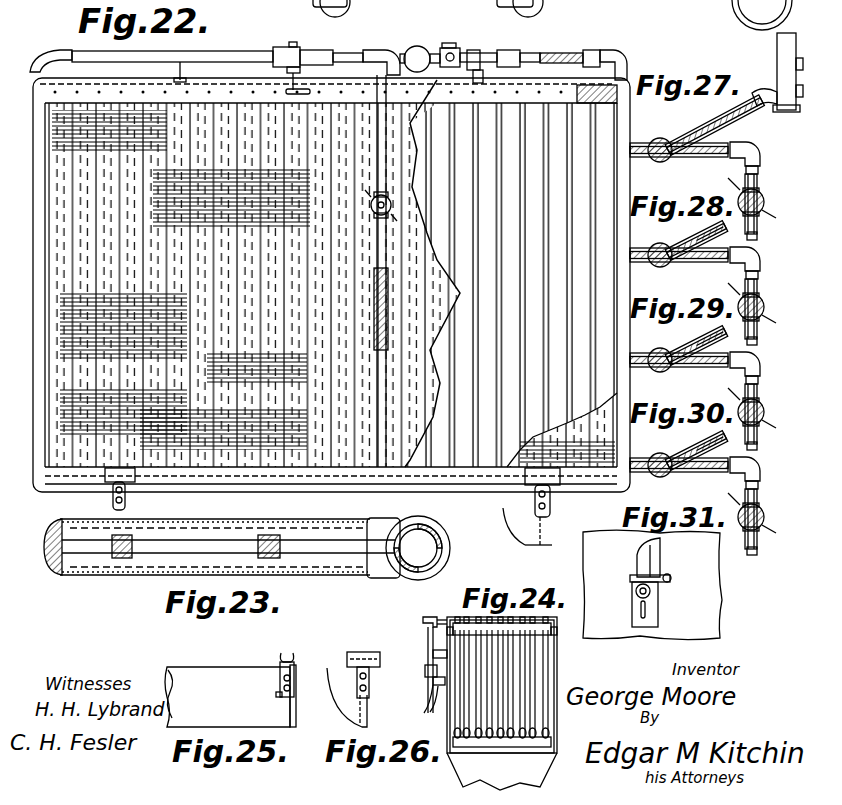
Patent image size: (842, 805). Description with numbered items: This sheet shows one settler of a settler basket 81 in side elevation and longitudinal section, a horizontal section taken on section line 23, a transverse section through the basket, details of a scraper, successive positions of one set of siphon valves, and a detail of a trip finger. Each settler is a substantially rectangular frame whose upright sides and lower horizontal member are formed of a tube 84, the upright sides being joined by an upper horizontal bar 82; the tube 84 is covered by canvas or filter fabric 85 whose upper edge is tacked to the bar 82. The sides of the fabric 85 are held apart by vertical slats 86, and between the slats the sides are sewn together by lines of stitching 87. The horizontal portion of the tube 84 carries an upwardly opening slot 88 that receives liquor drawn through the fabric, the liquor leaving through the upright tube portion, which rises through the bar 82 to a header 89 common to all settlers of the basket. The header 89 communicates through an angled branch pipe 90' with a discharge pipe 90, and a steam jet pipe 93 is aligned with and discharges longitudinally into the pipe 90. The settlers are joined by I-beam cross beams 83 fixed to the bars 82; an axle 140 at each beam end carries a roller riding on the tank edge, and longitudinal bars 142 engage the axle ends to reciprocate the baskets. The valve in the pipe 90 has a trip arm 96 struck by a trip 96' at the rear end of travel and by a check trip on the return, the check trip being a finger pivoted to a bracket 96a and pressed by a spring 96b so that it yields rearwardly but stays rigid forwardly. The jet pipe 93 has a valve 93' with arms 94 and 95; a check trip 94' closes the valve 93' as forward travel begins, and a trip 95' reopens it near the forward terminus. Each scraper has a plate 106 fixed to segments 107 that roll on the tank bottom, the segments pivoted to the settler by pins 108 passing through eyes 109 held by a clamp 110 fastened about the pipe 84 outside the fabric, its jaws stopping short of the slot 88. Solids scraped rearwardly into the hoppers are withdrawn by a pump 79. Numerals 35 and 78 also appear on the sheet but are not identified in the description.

In FIG. 22, the section line 23 is at (533, 432).
In FIG. 30, the section line 23 is at (640, 430).
In FIG. 22, the supply pipe 35 is at (187, 74).
In FIG. 22, the tank 78 is at (412, 9).
In FIG. 22, the pump 79 is at (545, 9).
In FIG. 22, the basket 81 is at (468, 47).
In FIG. 24, the basket 81 is at (505, 718).
In FIG. 22, the upper horizontal bar 82 is at (448, 97).
In FIG. 22, the cross beam 83 is at (178, 73).
In FIG. 24, the cross beam 83 is at (548, 640).
In FIG. 22, the tube 84 is at (614, 228).
In FIG. 23, the tube 84 is at (64, 573).
In FIG. 22, the filter fabric 85 is at (395, 497).
In FIG. 23, the filter fabric 85 is at (197, 540).
In FIG. 22, the slat 86 is at (527, 120).
In FIG. 23, the slat 86 is at (298, 522).
In FIG. 22, the line of stitching 87 is at (333, 287).
In FIG. 23, the line of stitching 87 is at (165, 519).
In FIG. 23, the slot 88 is at (52, 530).
In FIG. 22, the header 89 is at (428, 43).
In FIG. 24, the header 89 is at (428, 637).
In FIG. 27, the header 89 is at (778, 48).
In FIG. 22, the discharge pipe 90 is at (315, 51).
In FIG. 27, the discharge pipe 90 is at (679, 134).
In FIG. 28, the discharge pipe 90 is at (679, 238).
In FIG. 29, the discharge pipe 90 is at (679, 343).
In FIG. 30, the discharge pipe 90 is at (679, 479).
In FIG. 27, the branch pipe 90' is at (754, 114).
In FIG. 28, the branch pipe 90' is at (719, 238).
In FIG. 29, the branch pipe 90' is at (719, 343).
In FIG. 30, the branch pipe 90' is at (719, 449).
In FIG. 22, the jet pipe 93 is at (495, 249).
In FIG. 24, the jet pipe 93 is at (416, 669).
In FIG. 27, the jet pipe 93 is at (760, 158).
In FIG. 28, the jet pipe 93 is at (758, 263).
In FIG. 29, the jet pipe 93 is at (758, 365).
In FIG. 30, the jet pipe 93 is at (758, 473).
In FIG. 22, the valve 93' is at (410, 200).
In FIG. 27, the valve 93' is at (780, 206).
In FIG. 28, the valve 93' is at (776, 311).
In FIG. 29, the valve 93' is at (776, 415).
In FIG. 30, the valve 93' is at (776, 518).
In FIG. 27, the arm 94 is at (766, 201).
In FIG. 28, the arm 94 is at (762, 306).
In FIG. 29, the arm 94 is at (762, 403).
In FIG. 30, the arm 94 is at (762, 516).
In FIG. 27, the check trip 94' is at (726, 179).
In FIG. 28, the check trip 94' is at (723, 283).
In FIG. 29, the check trip 94' is at (759, 392).
In FIG. 30, the check trip 94' is at (734, 499).
In FIG. 27, the arm 95 is at (769, 229).
In FIG. 28, the arm 95 is at (767, 342).
In FIG. 29, the arm 95 is at (767, 442).
In FIG. 30, the trip 95' is at (766, 553).
In FIG. 27, the trip arm 96 is at (656, 162).
In FIG. 28, the trip arm 96 is at (652, 267).
In FIG. 29, the trip arm 96 is at (652, 372).
In FIG. 30, the trip arm 96 is at (664, 477).
In FIG. 27, the trip 96' is at (687, 174).
In FIG. 28, the trip 96' is at (681, 278).
In FIG. 29, the trip 96' is at (718, 388).
In FIG. 30, the trip 96' is at (705, 492).
In FIG. 24, the bracket 96a is at (432, 705).
In FIG. 31, the bracket 96a is at (658, 605).
In FIG. 31, the spring 96b is at (660, 579).
In FIG. 25, the scraper plate 106 is at (247, 667).
In FIG. 26, the scraper plate 106 is at (370, 710).
In FIG. 22, the segment 107 is at (524, 496).
In FIG. 25, the segment 107 is at (288, 702).
In FIG. 26, the segment 107 is at (340, 706).
In FIG. 22, the pin 108 is at (549, 517).
In FIG. 24, the pin 108 is at (409, 699).
In FIG. 25, the pin 108 is at (292, 657).
In FIG. 26, the pin 108 is at (369, 690).
In FIG. 22, the eye 109 is at (113, 500).
In FIG. 24, the eye 109 is at (433, 681).
In FIG. 25, the eye 109 is at (280, 680).
In FIG. 26, the eye 109 is at (369, 676).
In FIG. 22, the clamp 110 is at (127, 500).
In FIG. 24, the clamp 110 is at (433, 654).
In FIG. 25, the clamp 110 is at (292, 655).
In FIG. 24, the axle 140 is at (455, 623).
In FIG. 24, the longitudinal bar 142 is at (556, 640).